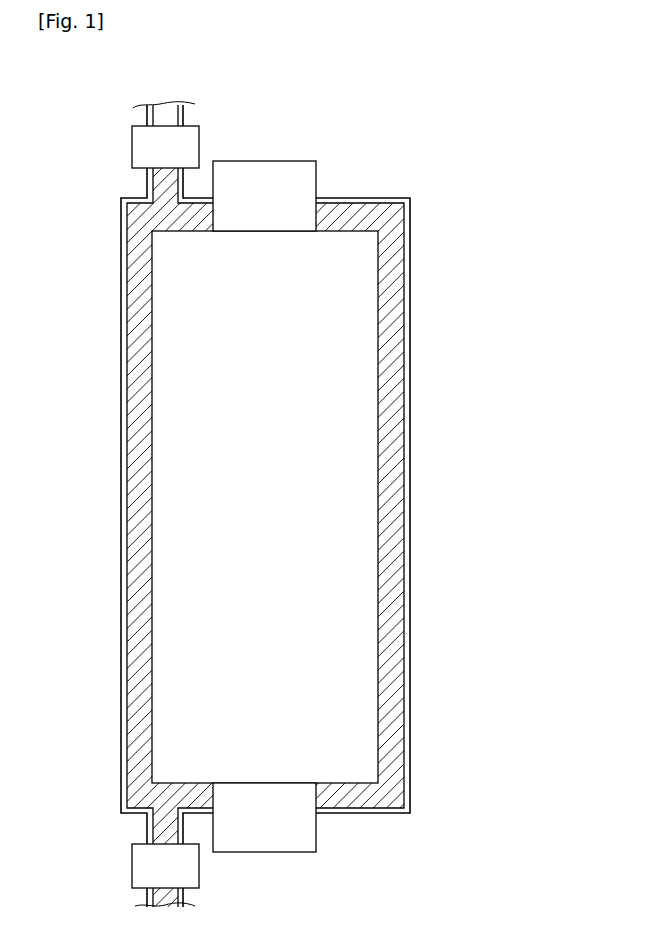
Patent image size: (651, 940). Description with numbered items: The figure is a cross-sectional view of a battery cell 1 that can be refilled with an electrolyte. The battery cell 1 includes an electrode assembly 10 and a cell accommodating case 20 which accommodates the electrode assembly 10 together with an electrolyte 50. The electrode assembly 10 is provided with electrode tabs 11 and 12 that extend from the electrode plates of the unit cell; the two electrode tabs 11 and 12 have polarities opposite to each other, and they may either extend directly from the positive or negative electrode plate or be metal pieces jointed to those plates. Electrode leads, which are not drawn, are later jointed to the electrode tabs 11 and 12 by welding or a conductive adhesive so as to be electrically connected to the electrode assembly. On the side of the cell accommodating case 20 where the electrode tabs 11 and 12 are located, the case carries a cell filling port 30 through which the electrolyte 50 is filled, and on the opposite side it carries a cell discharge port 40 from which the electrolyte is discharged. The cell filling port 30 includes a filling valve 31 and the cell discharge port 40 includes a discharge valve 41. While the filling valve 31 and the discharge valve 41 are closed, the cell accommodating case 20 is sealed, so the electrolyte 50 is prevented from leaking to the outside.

The battery cell 1 is at (408, 83).
The electrode assembly 10 is at (360, 443).
The electrode tab 11 is at (274, 176).
The electrode tab 12 is at (272, 843).
The cell accommodating case 20 is at (407, 397).
The cell filling port 30 is at (162, 107).
The filling valve 31 is at (132, 146).
The cell discharge port 40 is at (150, 903).
The discharge valve 41 is at (132, 866).
The electrolyte 50 is at (393, 329).